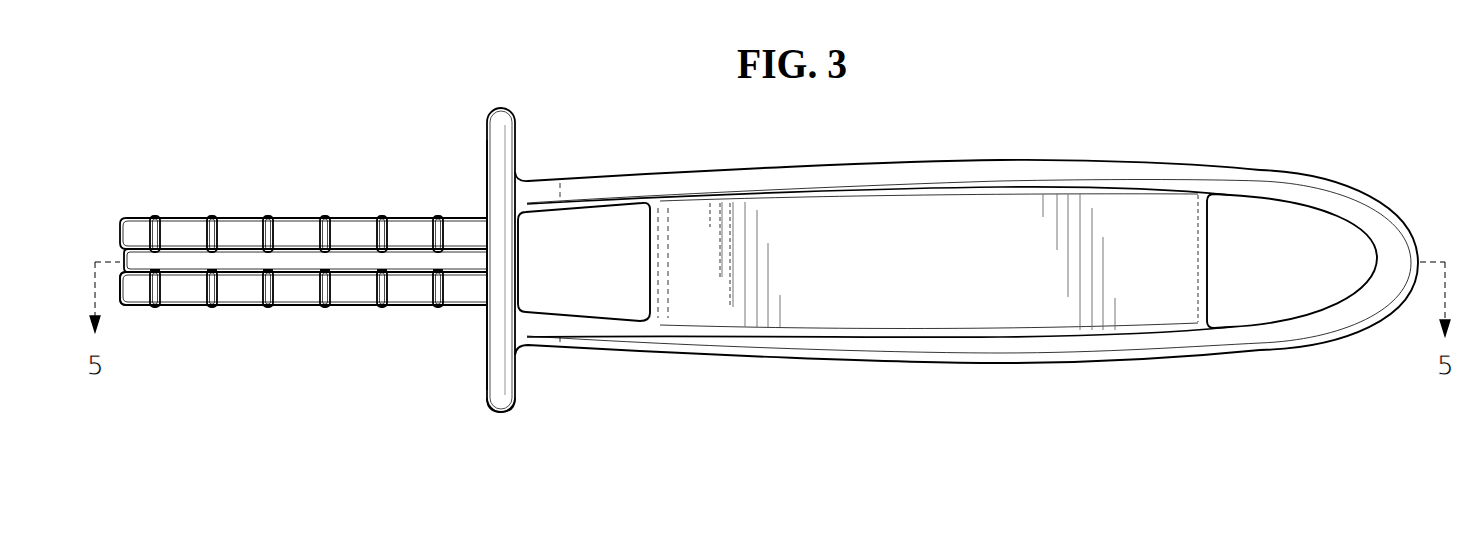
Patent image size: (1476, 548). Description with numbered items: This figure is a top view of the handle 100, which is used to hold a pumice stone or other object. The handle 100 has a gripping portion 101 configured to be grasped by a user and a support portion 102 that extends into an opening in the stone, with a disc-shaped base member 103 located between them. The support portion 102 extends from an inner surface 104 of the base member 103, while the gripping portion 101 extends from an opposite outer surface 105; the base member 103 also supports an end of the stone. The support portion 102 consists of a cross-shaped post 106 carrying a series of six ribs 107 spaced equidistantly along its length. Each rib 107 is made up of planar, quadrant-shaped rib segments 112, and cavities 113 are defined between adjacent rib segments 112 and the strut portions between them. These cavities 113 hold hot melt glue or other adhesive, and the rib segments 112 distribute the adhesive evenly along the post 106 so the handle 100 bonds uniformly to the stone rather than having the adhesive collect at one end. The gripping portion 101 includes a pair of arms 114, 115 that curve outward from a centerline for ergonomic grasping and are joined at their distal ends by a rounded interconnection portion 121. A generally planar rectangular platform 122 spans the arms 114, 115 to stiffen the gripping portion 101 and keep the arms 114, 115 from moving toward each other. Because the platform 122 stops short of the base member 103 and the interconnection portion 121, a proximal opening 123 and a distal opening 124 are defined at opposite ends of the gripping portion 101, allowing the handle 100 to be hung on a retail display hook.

The handle 100 is at (918, 76).
The gripping portion 101 is at (966, 243).
The support portion 102 is at (323, 194).
The base member 103 is at (500, 147).
The inner surface 104 is at (487, 192).
The outer surface 105 is at (519, 388).
The post 106 is at (122, 262).
The ribs 107 is at (158, 307).
The rib segments 112 is at (268, 228).
The cavities 113 is at (353, 294).
The first arm 114 is at (842, 163).
The second arm 115 is at (948, 363).
The interconnection portion 121 is at (1375, 305).
The platform 122 is at (1060, 217).
The proximal opening 123 is at (583, 242).
The distal opening 124 is at (1300, 237).